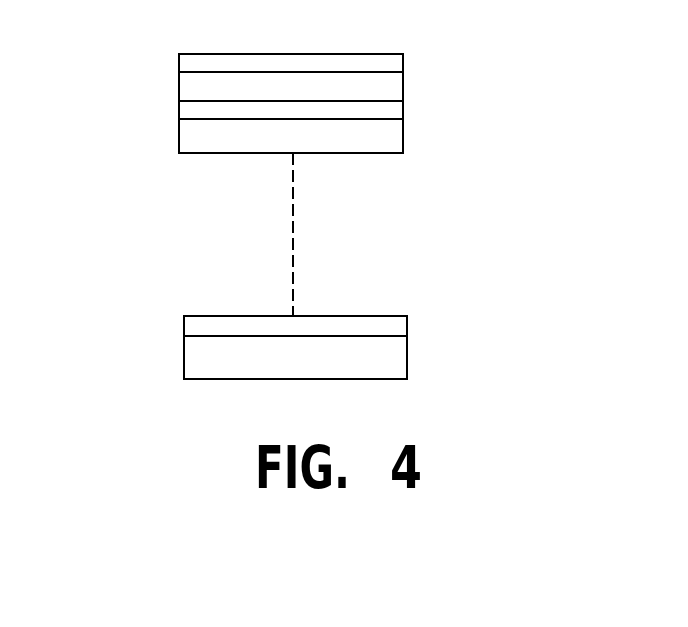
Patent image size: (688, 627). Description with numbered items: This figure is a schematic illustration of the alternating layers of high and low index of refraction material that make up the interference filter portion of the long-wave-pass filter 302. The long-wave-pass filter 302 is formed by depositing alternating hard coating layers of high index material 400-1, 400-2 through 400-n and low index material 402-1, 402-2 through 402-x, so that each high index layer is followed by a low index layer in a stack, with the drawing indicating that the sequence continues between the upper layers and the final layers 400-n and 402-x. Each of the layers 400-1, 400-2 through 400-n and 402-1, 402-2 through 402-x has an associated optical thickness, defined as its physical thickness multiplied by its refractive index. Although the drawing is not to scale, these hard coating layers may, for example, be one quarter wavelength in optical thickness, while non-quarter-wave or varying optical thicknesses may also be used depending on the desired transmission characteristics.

The long-wave-pass filter 302 is at (480, 98).
The high index of refraction layer 400-1 is at (179, 63).
The high index of refraction layer 400-2 is at (179, 109).
The high index of refraction layer 400-n is at (184, 327).
The low index of refraction layer 402-1 is at (403, 89).
The low index of refraction layer 402-2 is at (403, 147).
The low index of refraction layer 402-x is at (407, 358).